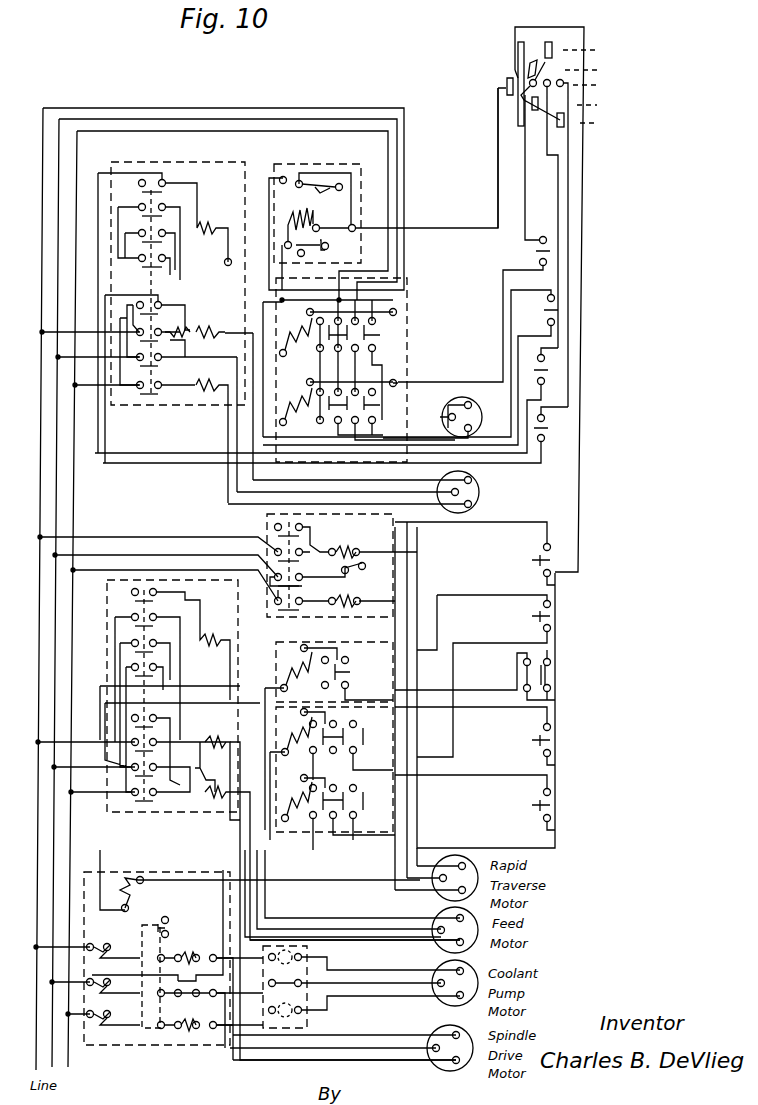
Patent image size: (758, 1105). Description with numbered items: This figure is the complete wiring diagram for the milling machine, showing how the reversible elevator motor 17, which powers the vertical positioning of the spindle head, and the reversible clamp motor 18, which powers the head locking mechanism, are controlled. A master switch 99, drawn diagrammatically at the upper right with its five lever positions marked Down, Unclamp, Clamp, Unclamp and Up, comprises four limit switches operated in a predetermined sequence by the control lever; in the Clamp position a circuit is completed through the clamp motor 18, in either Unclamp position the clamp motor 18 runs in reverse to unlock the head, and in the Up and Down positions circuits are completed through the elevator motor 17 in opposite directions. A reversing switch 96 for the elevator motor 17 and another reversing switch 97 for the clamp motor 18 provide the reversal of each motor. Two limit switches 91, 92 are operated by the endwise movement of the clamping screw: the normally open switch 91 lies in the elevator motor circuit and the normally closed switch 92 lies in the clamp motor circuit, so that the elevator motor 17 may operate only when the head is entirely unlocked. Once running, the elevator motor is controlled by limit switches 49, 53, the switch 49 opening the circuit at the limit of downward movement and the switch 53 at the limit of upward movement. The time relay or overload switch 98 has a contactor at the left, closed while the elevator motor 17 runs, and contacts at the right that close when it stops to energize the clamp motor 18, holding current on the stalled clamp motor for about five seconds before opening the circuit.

The reversing switch 96 is at (202, 154).
The time relay or overload switch 98 is at (359, 160).
The master switch 99 is at (578, 290).
The limit switch 92 is at (548, 243).
The limit switch 91 is at (548, 312).
The limit switch 49 is at (545, 362).
The limit switch 53 is at (545, 420).
The reversing switch 97 is at (440, 338).
The clamp motor 18 is at (476, 382).
The elevator motor 17 is at (480, 491).